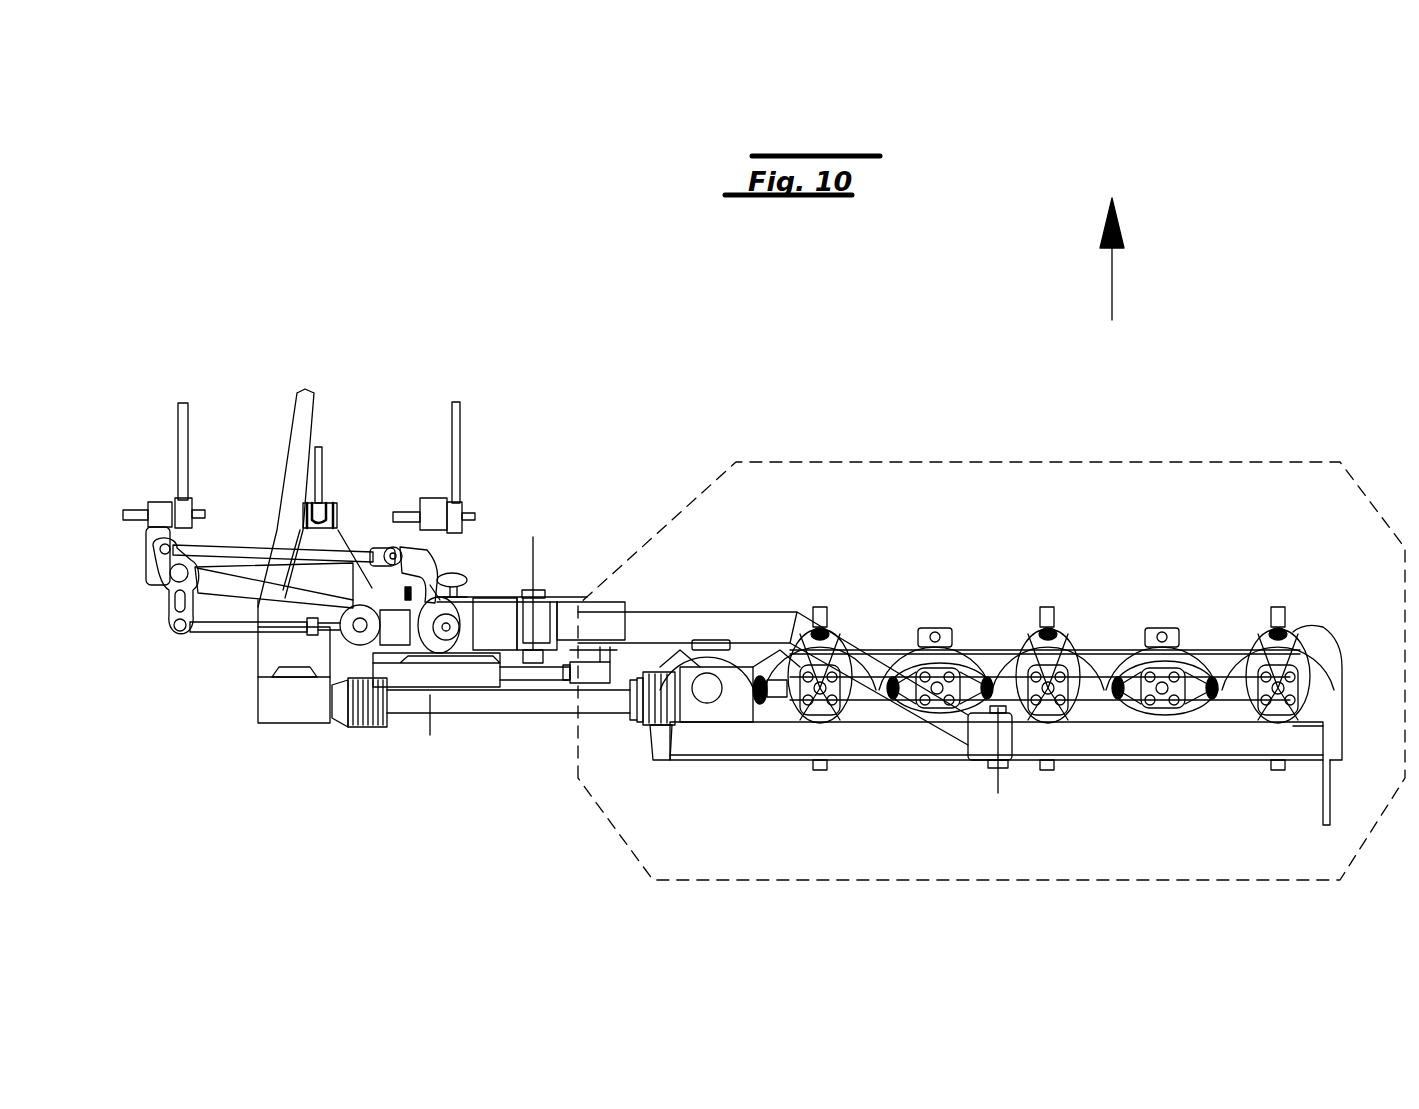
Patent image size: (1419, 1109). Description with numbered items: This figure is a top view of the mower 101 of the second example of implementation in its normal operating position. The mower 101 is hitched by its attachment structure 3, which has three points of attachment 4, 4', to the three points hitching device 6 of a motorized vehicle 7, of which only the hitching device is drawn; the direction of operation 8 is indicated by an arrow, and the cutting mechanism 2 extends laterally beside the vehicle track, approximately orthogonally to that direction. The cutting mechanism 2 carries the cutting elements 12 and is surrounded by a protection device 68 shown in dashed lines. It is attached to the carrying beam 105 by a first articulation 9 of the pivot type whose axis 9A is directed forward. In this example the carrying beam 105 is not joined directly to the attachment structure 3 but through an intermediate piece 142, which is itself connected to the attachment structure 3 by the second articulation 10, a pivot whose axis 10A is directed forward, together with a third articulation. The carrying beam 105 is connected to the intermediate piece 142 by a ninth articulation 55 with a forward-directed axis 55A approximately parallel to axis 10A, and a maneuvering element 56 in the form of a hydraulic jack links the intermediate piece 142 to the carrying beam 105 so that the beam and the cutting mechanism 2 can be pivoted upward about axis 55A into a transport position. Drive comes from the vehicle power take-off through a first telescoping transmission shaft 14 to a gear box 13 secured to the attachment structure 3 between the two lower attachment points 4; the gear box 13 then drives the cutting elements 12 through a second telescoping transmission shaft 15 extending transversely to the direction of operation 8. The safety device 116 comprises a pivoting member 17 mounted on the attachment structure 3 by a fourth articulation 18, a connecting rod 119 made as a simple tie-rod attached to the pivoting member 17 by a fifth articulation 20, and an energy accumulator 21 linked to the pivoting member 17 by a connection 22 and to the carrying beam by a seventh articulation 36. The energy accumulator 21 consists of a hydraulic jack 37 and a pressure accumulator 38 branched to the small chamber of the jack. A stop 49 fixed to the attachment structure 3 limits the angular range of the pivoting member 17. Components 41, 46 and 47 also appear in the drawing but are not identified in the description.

The cutting mechanism 2 is at (926, 620).
The attachment structure 3 is at (147, 500).
The lower attachment points 4 is at (325, 500).
The upper attachment point 4' is at (327, 526).
The three points hitching device 6 is at (317, 450).
The motorized vehicle 7 is at (446, 410).
The direction of operation 8 is at (1114, 278).
The first articulation 9 is at (988, 748).
The axis of the first articulation 9A is at (1000, 790).
The second articulation 10 is at (428, 662).
The axis of the second articulation 10A is at (430, 735).
The cutting elements 12 is at (1163, 660).
The gear box 13 is at (283, 725).
The first telescoping transmission shaft 14 is at (307, 407).
The second telescoping transmission shaft 15 is at (607, 706).
The pivoting member 17 is at (176, 638).
The fourth articulation 18 is at (160, 590).
The fifth articulation 20 is at (158, 548).
The energy accumulator 21 is at (245, 632).
The connection 22 is at (181, 648).
The seventh articulation 36 is at (447, 660).
The hydraulic jack 37 is at (398, 625).
The pressure accumulator 38 is at (333, 643).
The pivot 41 is at (398, 550).
The lever arm 46 is at (435, 588).
The bell crank 47 is at (425, 575).
The stop 49 is at (145, 562).
The ninth articulation 55 is at (523, 637).
The axis of the ninth articulation 55A is at (535, 568).
The maneuvering element 56 is at (523, 677).
The protection device 68 is at (912, 462).
The mower 101 is at (750, 380).
The carrying beam 105 is at (755, 605).
The safety device 116 is at (138, 634).
The connecting rod 119 is at (250, 550).
The intermediate piece 142 is at (583, 630).